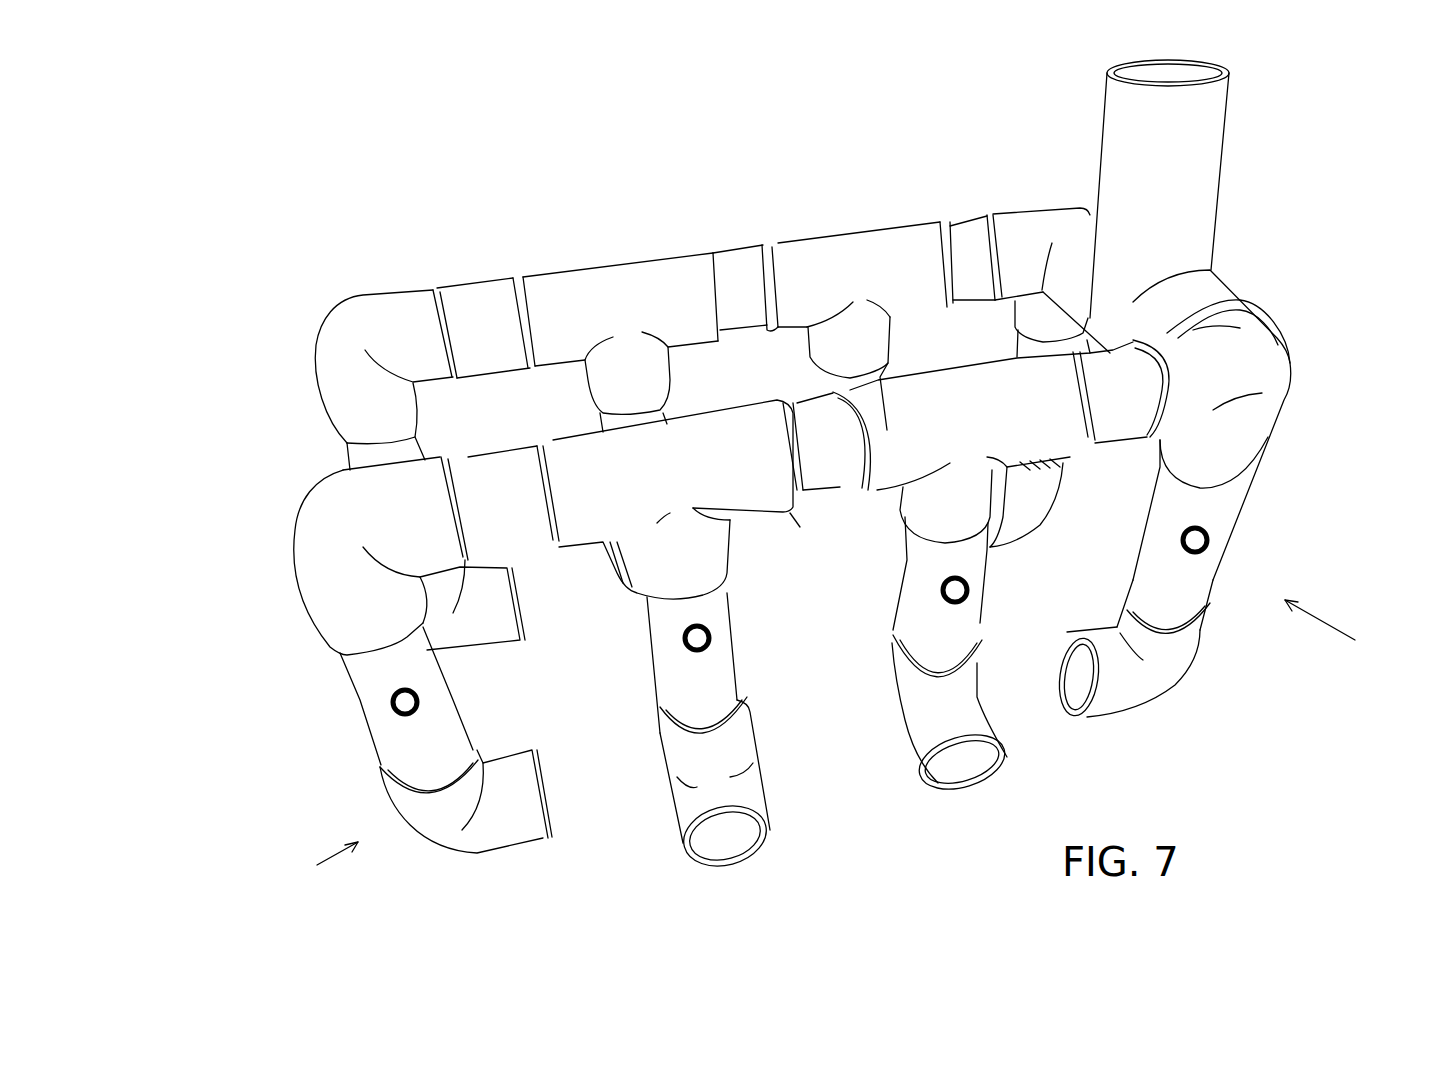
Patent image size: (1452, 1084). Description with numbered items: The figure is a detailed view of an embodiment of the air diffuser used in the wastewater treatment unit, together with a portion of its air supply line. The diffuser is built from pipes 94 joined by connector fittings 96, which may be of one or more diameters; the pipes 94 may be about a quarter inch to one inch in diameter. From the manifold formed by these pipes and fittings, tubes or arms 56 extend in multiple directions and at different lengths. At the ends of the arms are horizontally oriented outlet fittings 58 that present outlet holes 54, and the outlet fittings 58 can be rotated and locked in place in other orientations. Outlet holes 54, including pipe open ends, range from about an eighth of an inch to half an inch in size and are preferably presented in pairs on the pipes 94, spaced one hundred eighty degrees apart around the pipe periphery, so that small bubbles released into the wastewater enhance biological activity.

The pipes 94 is at (970, 223).
The connector fittings 96 is at (825, 262).
The outlet holes 54 is at (418, 702).
The tubes or arms 56 is at (837, 742).
The outlet fittings 58 is at (503, 640).